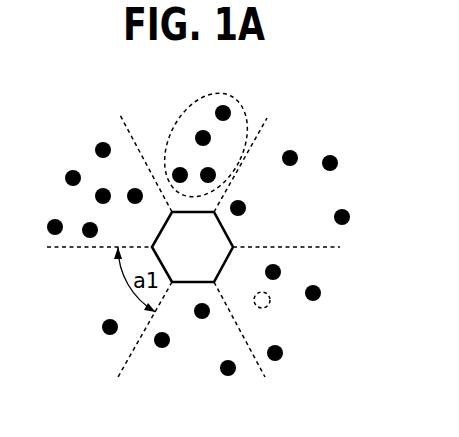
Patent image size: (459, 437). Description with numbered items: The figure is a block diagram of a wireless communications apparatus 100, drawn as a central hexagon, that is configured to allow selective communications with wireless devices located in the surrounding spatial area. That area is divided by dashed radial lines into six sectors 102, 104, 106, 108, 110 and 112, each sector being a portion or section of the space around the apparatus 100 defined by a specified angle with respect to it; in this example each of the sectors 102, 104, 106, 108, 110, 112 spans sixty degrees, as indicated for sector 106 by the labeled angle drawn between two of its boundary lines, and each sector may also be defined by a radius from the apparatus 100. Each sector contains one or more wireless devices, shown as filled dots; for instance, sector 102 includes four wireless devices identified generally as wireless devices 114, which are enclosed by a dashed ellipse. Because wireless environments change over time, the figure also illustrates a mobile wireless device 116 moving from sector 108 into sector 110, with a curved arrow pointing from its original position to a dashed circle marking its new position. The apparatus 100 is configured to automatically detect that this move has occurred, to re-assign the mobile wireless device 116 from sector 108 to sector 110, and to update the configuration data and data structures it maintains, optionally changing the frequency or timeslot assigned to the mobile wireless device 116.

The wireless communications apparatus 100 is at (210, 258).
The sector 102 is at (168, 115).
The sector 104 is at (55, 168).
The sector 106 is at (86, 313).
The sector 108 is at (188, 388).
The sector 110 is at (326, 340).
The sector 112 is at (310, 221).
The wireless devices 114 is at (228, 94).
The mobile wireless device 116 is at (253, 306).